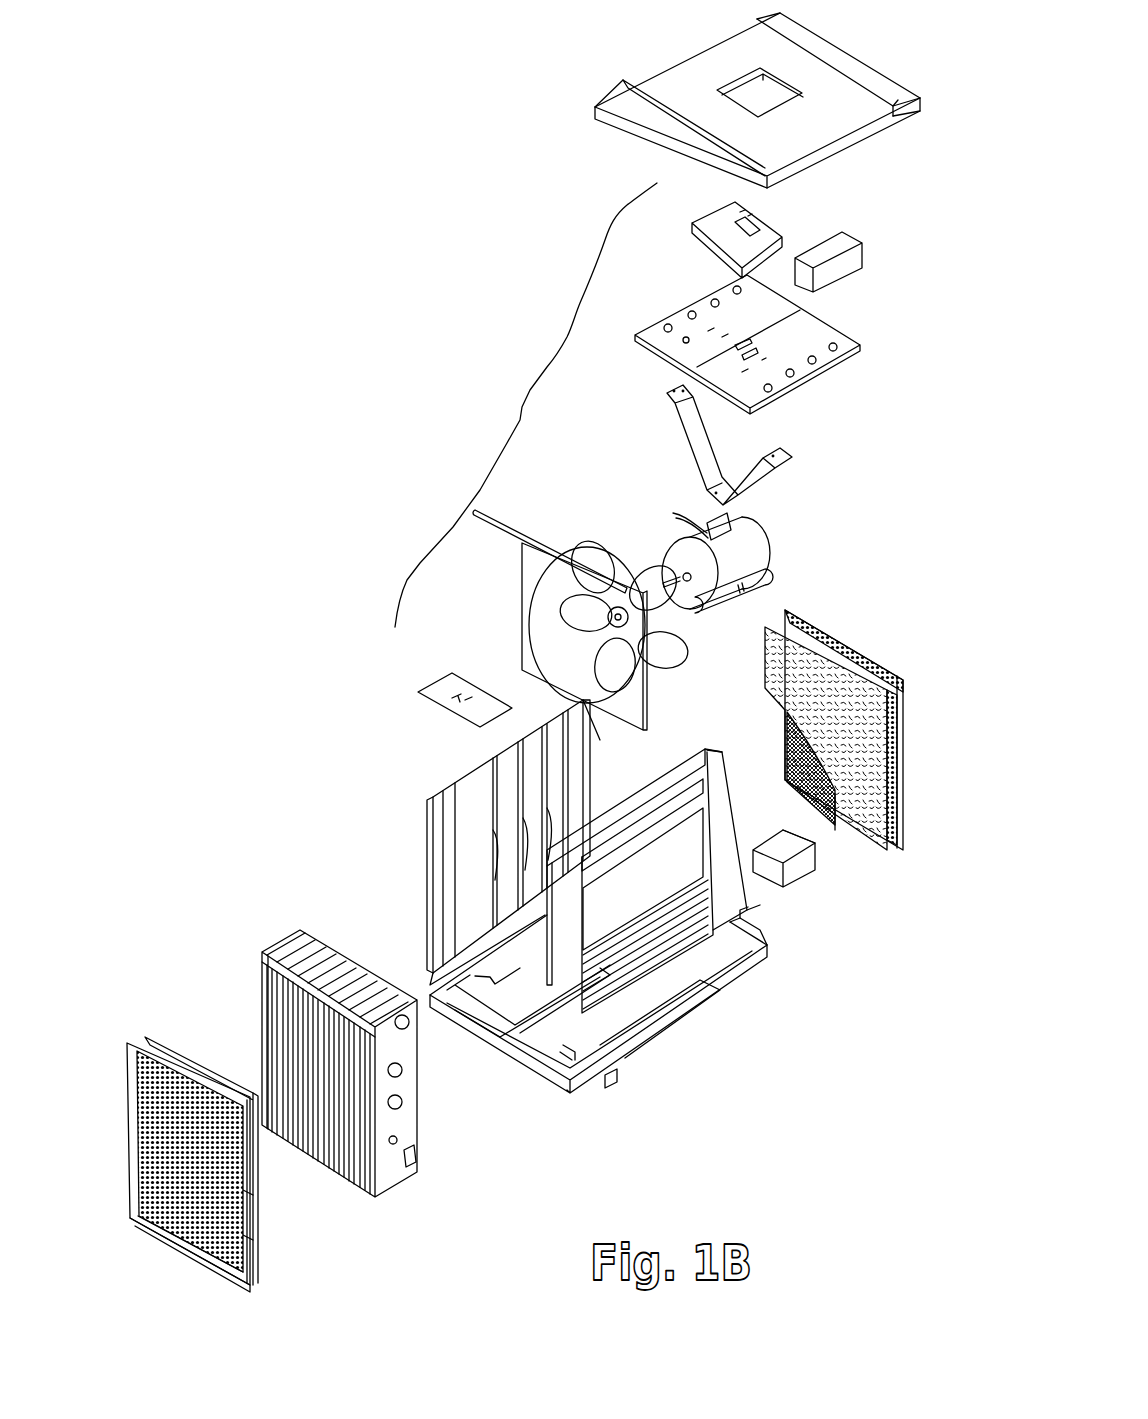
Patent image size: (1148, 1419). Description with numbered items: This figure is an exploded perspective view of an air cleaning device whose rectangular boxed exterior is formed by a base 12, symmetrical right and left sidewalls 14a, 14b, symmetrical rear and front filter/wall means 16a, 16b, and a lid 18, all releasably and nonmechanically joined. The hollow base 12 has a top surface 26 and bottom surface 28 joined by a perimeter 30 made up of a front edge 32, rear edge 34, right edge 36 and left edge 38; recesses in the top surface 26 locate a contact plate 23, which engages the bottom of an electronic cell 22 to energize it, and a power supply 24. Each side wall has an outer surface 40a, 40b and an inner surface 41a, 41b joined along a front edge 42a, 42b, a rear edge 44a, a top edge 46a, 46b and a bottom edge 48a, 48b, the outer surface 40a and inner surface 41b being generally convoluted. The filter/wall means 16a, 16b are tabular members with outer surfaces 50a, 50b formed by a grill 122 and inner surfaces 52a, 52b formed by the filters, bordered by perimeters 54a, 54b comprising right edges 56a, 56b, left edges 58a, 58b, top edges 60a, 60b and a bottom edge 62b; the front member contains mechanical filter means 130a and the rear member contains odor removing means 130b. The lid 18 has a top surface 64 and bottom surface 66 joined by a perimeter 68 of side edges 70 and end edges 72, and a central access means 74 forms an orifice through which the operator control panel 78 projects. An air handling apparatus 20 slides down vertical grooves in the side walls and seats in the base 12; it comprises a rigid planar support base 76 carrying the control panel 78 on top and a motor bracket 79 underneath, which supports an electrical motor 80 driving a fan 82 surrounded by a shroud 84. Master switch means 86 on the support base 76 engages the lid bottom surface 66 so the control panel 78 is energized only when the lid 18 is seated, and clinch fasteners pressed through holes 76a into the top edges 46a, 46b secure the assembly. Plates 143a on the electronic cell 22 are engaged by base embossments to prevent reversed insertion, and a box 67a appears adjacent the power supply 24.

The base 12 is at (622, 1019).
The right sidewall 14a is at (707, 902).
The left sidewall 14b is at (467, 814).
The rear filter/wall means 16a is at (843, 696).
The front filter/wall means 16b is at (211, 1127).
The lid 18 is at (738, 99).
The air handling apparatus 20 is at (526, 405).
The electronic cell 22 is at (341, 1070).
The contact plate 23 is at (455, 672).
The power supply 24 is at (804, 853).
The top surface 26 is at (585, 1058).
The bottom surface 28 is at (605, 1080).
The perimeter 30 is at (752, 967).
The front edge 32 is at (496, 1043).
The rear edge 34 is at (770, 940).
The right edge 36 is at (675, 1022).
The left edge 38 is at (447, 1015).
The outer surface 40a is at (638, 902).
The outer surface 40b is at (476, 836).
The inner surface 41a is at (682, 765).
The inner surface 41b is at (600, 740).
The front edge 42a is at (520, 1058).
The front edge 42b is at (426, 880).
The rear edge 44a is at (718, 792).
The top edge 46a is at (640, 808).
The top edge 46b is at (622, 617).
The bottom edge 48a is at (742, 905).
The bottom edge 48b is at (430, 968).
The outer surface 50a is at (905, 732).
The outer surface 50b is at (208, 1262).
The inner surface 52a is at (790, 745).
The inner surface 52b is at (260, 1240).
The perimeter 54a is at (800, 628).
The perimeter 54b is at (180, 1062).
The right edge 56a is at (905, 790).
The right edge 56b is at (258, 1203).
The left edge 58a is at (775, 622).
The left edge 58b is at (123, 1108).
The top edge 60a is at (852, 660).
The top edge 60b is at (208, 1086).
The bottom edge 62b is at (170, 1245).
The top surface 64 is at (694, 90).
The bottom surface 66 is at (867, 136).
The transformer top 67a is at (818, 830).
The perimeter 68 is at (918, 116).
The side edges 70 is at (742, 25).
The end edges 72 is at (880, 84).
The access means 74 is at (790, 82).
The support base 76 is at (767, 350).
The holes 76a is at (770, 392).
The operator control panel 78 is at (700, 246).
The motor bracket 79 is at (683, 446).
The electrical motor 80 is at (752, 568).
The fan 82 is at (594, 556).
The shroud 84 is at (580, 632).
The master switch means 86 is at (838, 265).
The grill 122 is at (905, 875).
The mechanical filter means 130a is at (258, 1228).
The odor removing means 130b is at (845, 828).
The plates 143a is at (417, 1160).